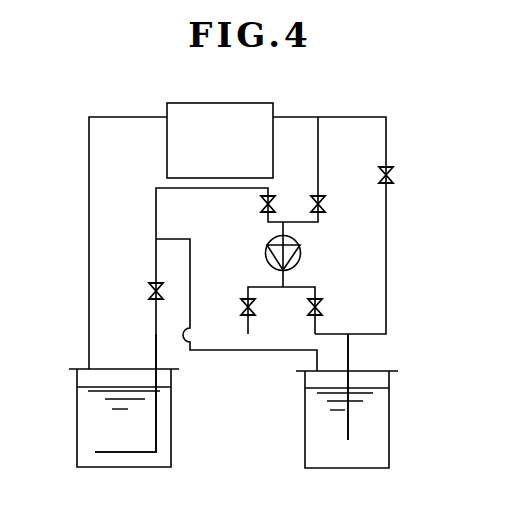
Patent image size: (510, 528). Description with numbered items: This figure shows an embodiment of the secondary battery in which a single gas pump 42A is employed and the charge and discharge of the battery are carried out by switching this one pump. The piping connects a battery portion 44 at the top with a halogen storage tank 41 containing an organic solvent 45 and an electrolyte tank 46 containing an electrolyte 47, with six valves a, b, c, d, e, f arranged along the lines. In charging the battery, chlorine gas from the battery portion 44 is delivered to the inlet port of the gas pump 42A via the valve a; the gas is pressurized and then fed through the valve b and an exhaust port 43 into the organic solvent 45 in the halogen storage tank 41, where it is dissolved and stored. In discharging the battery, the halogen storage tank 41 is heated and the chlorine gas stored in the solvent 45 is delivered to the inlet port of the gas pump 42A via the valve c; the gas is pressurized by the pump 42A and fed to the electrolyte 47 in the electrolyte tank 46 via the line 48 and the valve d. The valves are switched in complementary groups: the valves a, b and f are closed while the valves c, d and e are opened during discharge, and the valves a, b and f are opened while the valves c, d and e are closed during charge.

The battery portion 44 is at (238, 103).
The gas pump 42A is at (301, 252).
The exhaust port 43 is at (348, 353).
The halogen storage tank 41 is at (389, 413).
The organic solvent 45 is at (375, 445).
The electrolyte tank 46 is at (76, 410).
The electrolyte 47 is at (88, 437).
The line 48 is at (124, 453).
The valve a is at (325, 204).
The valve b is at (322, 307).
The valve c is at (261, 205).
The valve d is at (241, 307).
The valve e is at (393, 175).
The valve f is at (148, 291).